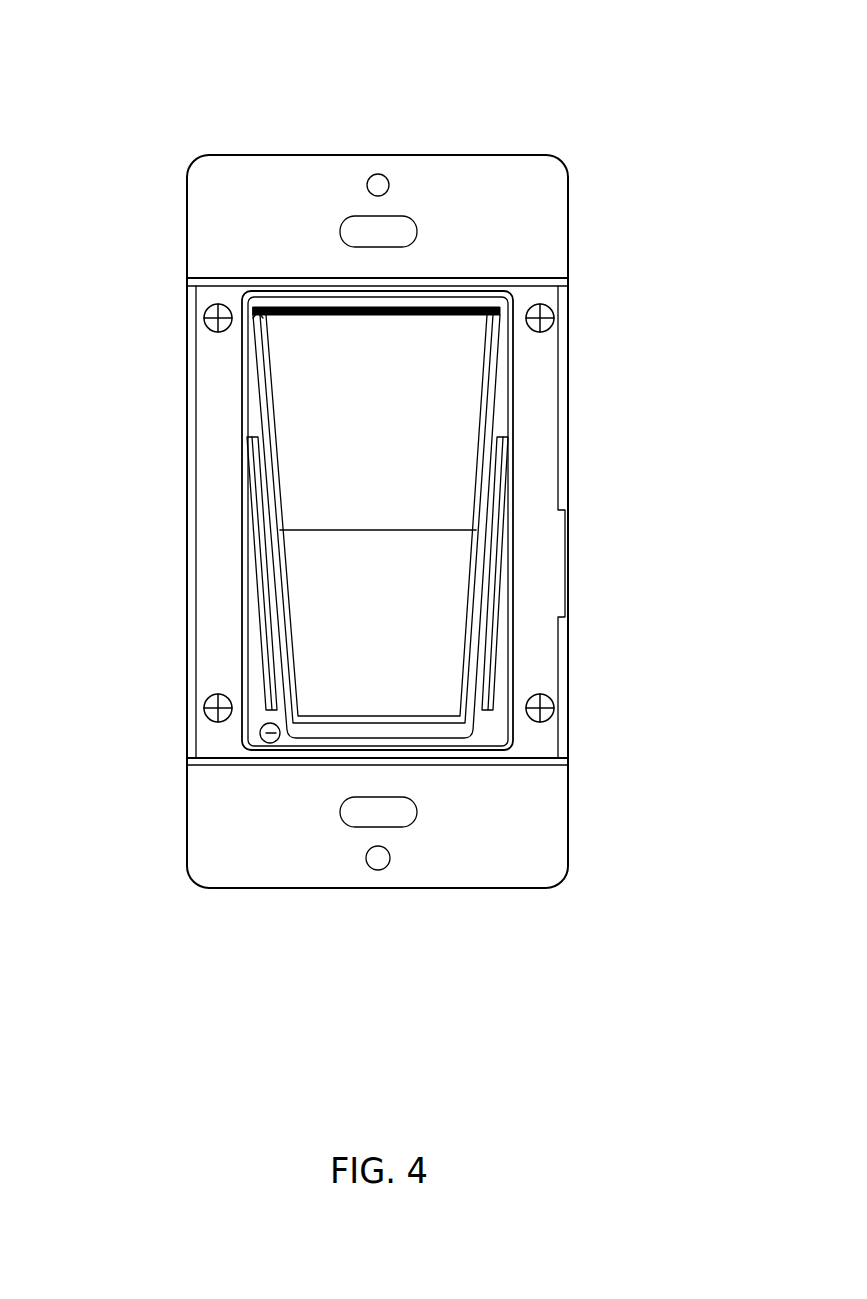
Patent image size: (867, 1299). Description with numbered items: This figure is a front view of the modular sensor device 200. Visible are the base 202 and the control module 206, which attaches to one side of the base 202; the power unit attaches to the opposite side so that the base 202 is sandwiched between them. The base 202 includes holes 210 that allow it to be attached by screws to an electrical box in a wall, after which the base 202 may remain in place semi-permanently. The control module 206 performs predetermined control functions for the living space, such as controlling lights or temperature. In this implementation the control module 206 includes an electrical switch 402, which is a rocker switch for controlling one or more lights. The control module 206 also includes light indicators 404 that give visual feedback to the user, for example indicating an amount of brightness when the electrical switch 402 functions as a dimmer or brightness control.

The modular sensor device 200 is at (371, 556).
The base 202 is at (556, 165).
The control module 206 is at (545, 401).
The holes 210 is at (388, 156).
The electrical switch 402 is at (467, 351).
The light indicators 404 is at (252, 467).